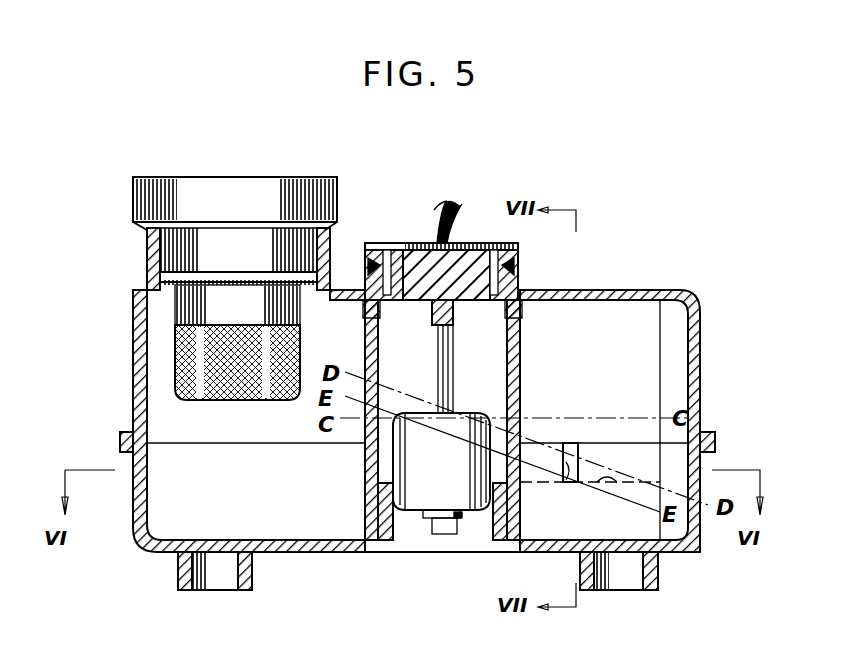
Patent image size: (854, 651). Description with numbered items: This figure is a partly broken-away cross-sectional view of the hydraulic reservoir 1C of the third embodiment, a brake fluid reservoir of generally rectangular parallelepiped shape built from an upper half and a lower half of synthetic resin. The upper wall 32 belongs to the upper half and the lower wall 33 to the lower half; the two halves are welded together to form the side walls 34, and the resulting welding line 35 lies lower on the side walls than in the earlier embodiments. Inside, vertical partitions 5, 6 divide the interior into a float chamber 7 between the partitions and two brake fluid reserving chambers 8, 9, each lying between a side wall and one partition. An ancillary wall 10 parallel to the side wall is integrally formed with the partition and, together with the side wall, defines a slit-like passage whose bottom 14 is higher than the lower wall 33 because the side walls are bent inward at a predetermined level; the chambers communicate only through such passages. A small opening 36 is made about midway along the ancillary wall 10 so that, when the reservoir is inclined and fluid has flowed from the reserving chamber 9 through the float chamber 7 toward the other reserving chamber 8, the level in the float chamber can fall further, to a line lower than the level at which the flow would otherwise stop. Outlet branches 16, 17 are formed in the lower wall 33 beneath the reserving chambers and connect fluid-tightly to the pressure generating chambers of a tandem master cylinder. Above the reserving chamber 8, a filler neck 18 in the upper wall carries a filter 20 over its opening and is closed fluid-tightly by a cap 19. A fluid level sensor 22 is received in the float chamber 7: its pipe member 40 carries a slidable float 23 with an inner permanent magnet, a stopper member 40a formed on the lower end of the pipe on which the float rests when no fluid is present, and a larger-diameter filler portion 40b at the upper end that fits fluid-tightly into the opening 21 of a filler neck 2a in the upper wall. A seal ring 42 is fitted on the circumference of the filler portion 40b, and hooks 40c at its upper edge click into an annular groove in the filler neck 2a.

The hydraulic reservoir 1C is at (658, 166).
The filler neck 2a is at (378, 252).
The partition 5 is at (520, 358).
The partition 6 is at (365, 332).
The float chamber 7 is at (388, 470).
The brake fluid reserving chamber 8 is at (200, 431).
The brake fluid reserving chamber 9 is at (605, 330).
The ancillary wall 10 is at (648, 347).
The bottom of oblong passage 14 is at (608, 483).
The outlet branch 16 is at (640, 565).
The outlet branch 17 is at (236, 565).
The filler neck 18 is at (160, 258).
The cap 19 is at (222, 190).
The filter 20 is at (210, 358).
The opening 21 is at (468, 265).
The fluid level sensor 22 is at (430, 232).
The float 23 is at (433, 487).
The upper wall 32 is at (633, 292).
The lower wall 33 is at (298, 557).
The side walls 34 is at (138, 372).
The welding line 35 is at (612, 440).
The small opening 36 is at (570, 480).
The pipe member 40 is at (446, 357).
The stopper member 40a is at (463, 518).
The filler portion 40b is at (385, 262).
The hooks 40c is at (377, 270).
The seal ring 42 is at (365, 300).